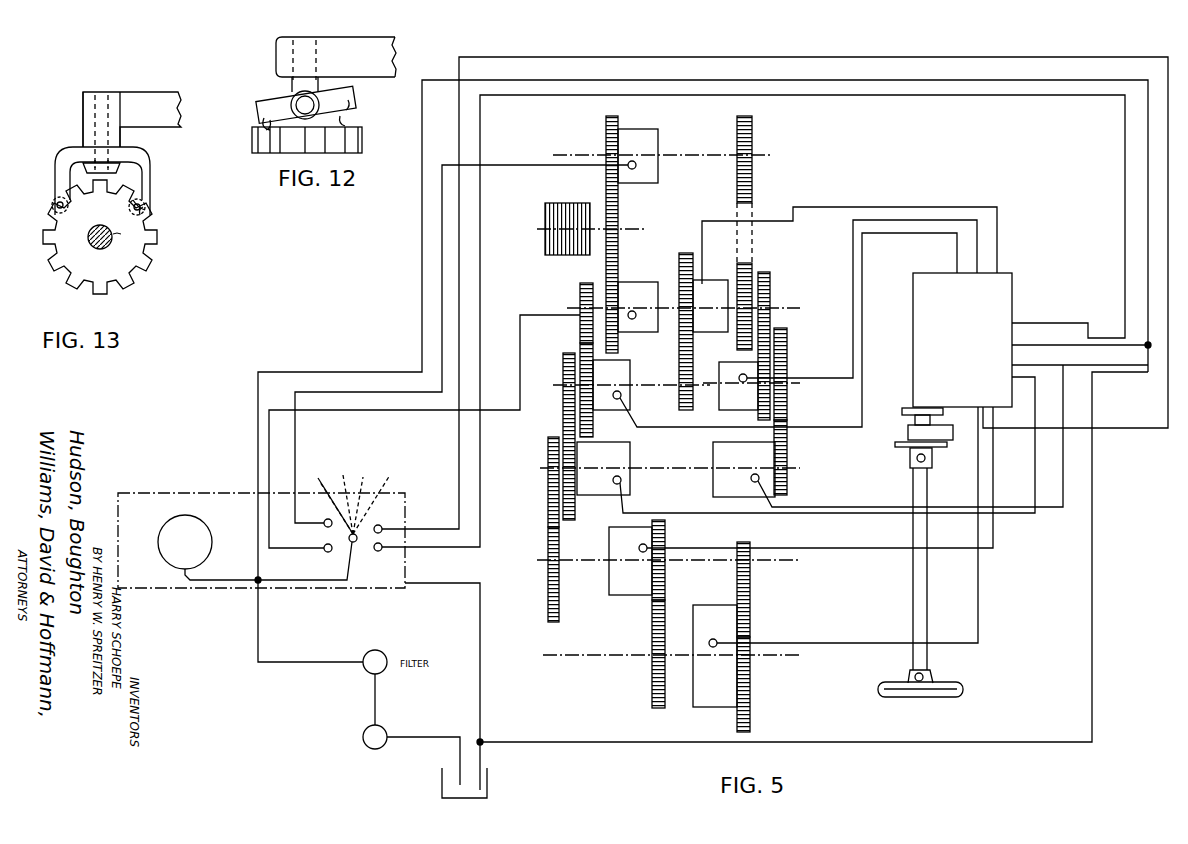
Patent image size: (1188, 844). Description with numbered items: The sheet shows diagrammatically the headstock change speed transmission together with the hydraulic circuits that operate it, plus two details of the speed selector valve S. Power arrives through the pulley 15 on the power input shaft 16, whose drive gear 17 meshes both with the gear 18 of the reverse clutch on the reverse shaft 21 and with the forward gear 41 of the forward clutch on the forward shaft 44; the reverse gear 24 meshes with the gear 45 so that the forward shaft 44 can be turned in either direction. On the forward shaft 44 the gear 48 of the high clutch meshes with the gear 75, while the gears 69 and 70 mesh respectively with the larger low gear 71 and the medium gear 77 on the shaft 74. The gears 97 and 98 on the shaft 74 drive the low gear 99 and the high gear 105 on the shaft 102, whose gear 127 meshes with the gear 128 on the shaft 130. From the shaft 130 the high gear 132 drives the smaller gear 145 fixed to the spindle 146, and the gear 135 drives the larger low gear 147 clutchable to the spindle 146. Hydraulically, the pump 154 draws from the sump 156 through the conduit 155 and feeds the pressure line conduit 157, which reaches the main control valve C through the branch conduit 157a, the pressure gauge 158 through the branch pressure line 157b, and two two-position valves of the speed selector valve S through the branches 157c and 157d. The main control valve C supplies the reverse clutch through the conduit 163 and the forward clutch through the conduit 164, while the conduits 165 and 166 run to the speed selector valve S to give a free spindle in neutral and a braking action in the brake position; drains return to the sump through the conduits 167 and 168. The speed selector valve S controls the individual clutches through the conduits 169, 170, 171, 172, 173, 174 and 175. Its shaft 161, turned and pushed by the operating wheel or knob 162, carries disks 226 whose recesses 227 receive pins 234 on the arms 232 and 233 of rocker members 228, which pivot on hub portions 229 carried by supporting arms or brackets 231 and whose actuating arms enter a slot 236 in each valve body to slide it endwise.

In FIG. 5, the pulley 15 is at (566, 202).
In FIG. 5, the power input shaft 16 is at (647, 228).
In FIG. 5, the drive gear 17 is at (623, 217).
In FIG. 5, the gear 18 is at (619, 123).
In FIG. 5, the reverse shaft 21 is at (583, 151).
In FIG. 5, the reverse gear 24 is at (732, 136).
In FIG. 5, the forward gear 41 is at (621, 281).
In FIG. 5, the forward shaft 44 is at (668, 322).
In FIG. 5, the gear 45 is at (740, 348).
In FIG. 5, the gear 48 is at (676, 255).
In FIG. 5, the gear 69 is at (580, 292).
In FIG. 5, the gear 70 is at (770, 292).
In FIG. 5, the gear 71 is at (580, 343).
In FIG. 5, the shaft 74 is at (643, 399).
In FIG. 5, the gear 75 is at (699, 412).
In FIG. 5, the gear 77 is at (762, 432).
In FIG. 5, the gear 97 is at (563, 403).
In FIG. 5, the gear 98 is at (787, 418).
In FIG. 5, the gear 99 is at (575, 513).
In FIG. 5, the shaft 102 is at (649, 465).
In FIG. 5, the gear 105 is at (787, 461).
In FIG. 5, the gear 127 is at (548, 462).
In FIG. 5, the gear 128 is at (559, 589).
In FIG. 5, the shaft 130 is at (713, 554).
In FIG. 5, the gear 132 is at (667, 534).
In FIG. 5, the gear 135 is at (755, 538).
In FIG. 5, the gear 145 is at (652, 697).
In FIG. 5, the spindle 146 is at (573, 660).
In FIG. 5, the gear 147 is at (750, 691).
In FIG. 5, the pump 154 is at (385, 729).
In FIG. 5, the conduit 155 is at (426, 738).
In FIG. 5, the sump 156 is at (487, 793).
In FIG. 5, the pressure line conduit 157 is at (1148, 194).
In FIG. 5, the branch conduit 157a is at (354, 580).
In FIG. 5, the branch pressure line 157b is at (229, 564).
In FIG. 5, the branch 157c is at (1091, 349).
In FIG. 5, the branch 157d is at (1103, 373).
In FIG. 5, the pressure gauge 158 is at (195, 524).
In FIG. 13, the shaft 161 is at (139, 252).
In FIG. 5, the operating wheel or knob 162 is at (960, 692).
In FIG. 5, the conduit 163 is at (450, 138).
In FIG. 5, the conduit 164 is at (403, 409).
In FIG. 5, the conduit 165 is at (448, 440).
In FIG. 5, the conduit 166 is at (479, 518).
In FIG. 5, the conduit 167 is at (468, 562).
In FIG. 5, the conduit 168 is at (1093, 583).
In FIG. 5, the conduit 169 is at (811, 205).
In FIG. 5, the conduit 170 is at (647, 432).
In FIG. 5, the conduit 171 is at (889, 219).
In FIG. 5, the conduit 172 is at (1035, 469).
In FIG. 5, the conduit 173 is at (1065, 479).
In FIG. 5, the conduit 174 is at (819, 548).
In FIG. 5, the conduit 175 is at (979, 593).
In FIG. 13, the disk 226 is at (148, 216).
In FIG. 12, the disk 226 is at (326, 140).
In FIG. 13, the recess 227 is at (54, 242).
In FIG. 13, the rocker member 228 is at (130, 149).
In FIG. 13, the hub portion 229 is at (80, 139).
In FIG. 12, the hub portion 229 is at (320, 95).
In FIG. 13, the supporting arm or bracket 231 is at (168, 104).
In FIG. 13, the arm 232 is at (57, 168).
In FIG. 12, the arm 232 is at (280, 96).
In FIG. 13, the arm 233 is at (146, 170).
In FIG. 12, the arm 233 is at (356, 102).
In FIG. 13, the pin 234 is at (52, 206).
In FIG. 12, the pin 234 is at (264, 124).
In FIG. 12, the slot 236 is at (321, 69).
In FIG. 5, the main control valve C is at (279, 522).
In FIG. 5, the speed selector valve S is at (1012, 283).